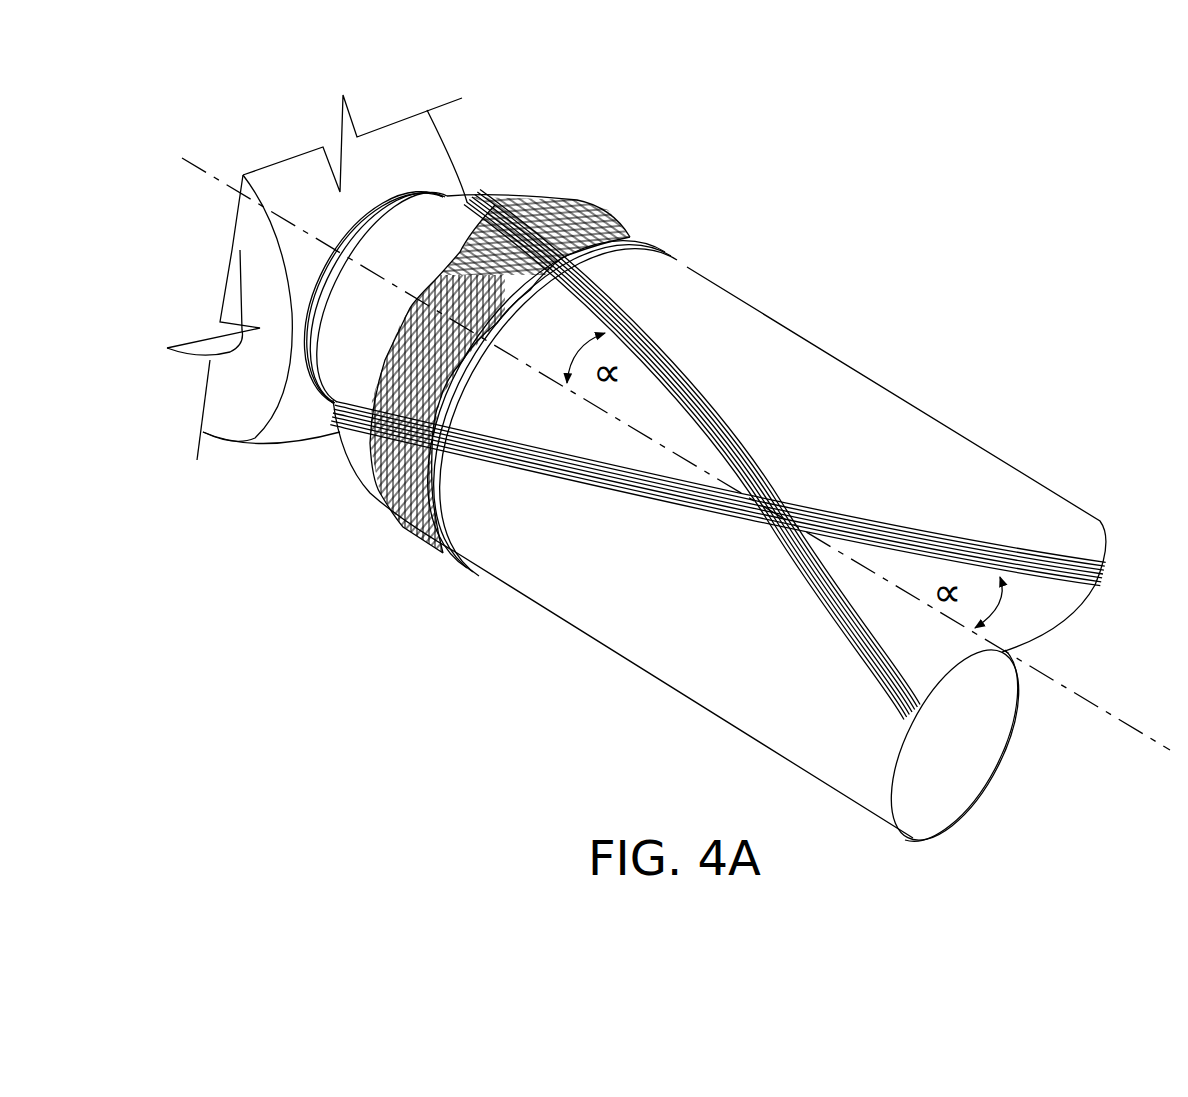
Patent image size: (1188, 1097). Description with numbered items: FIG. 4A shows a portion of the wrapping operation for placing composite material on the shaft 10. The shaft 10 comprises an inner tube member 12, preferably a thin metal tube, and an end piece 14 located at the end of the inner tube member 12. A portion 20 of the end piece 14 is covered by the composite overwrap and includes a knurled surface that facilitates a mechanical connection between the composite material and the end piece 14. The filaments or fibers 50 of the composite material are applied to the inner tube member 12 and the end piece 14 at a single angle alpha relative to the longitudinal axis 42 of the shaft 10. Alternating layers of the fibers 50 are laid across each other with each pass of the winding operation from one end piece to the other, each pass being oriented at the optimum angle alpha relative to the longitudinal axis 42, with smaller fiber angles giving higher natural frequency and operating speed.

The shaft 10 is at (717, 220).
The inner tube member 12 is at (867, 370).
The end piece 14 is at (599, 199).
The portion of the end piece 20 is at (523, 198).
The longitudinal axis 42 is at (1124, 716).
The fibers 50 is at (820, 563).